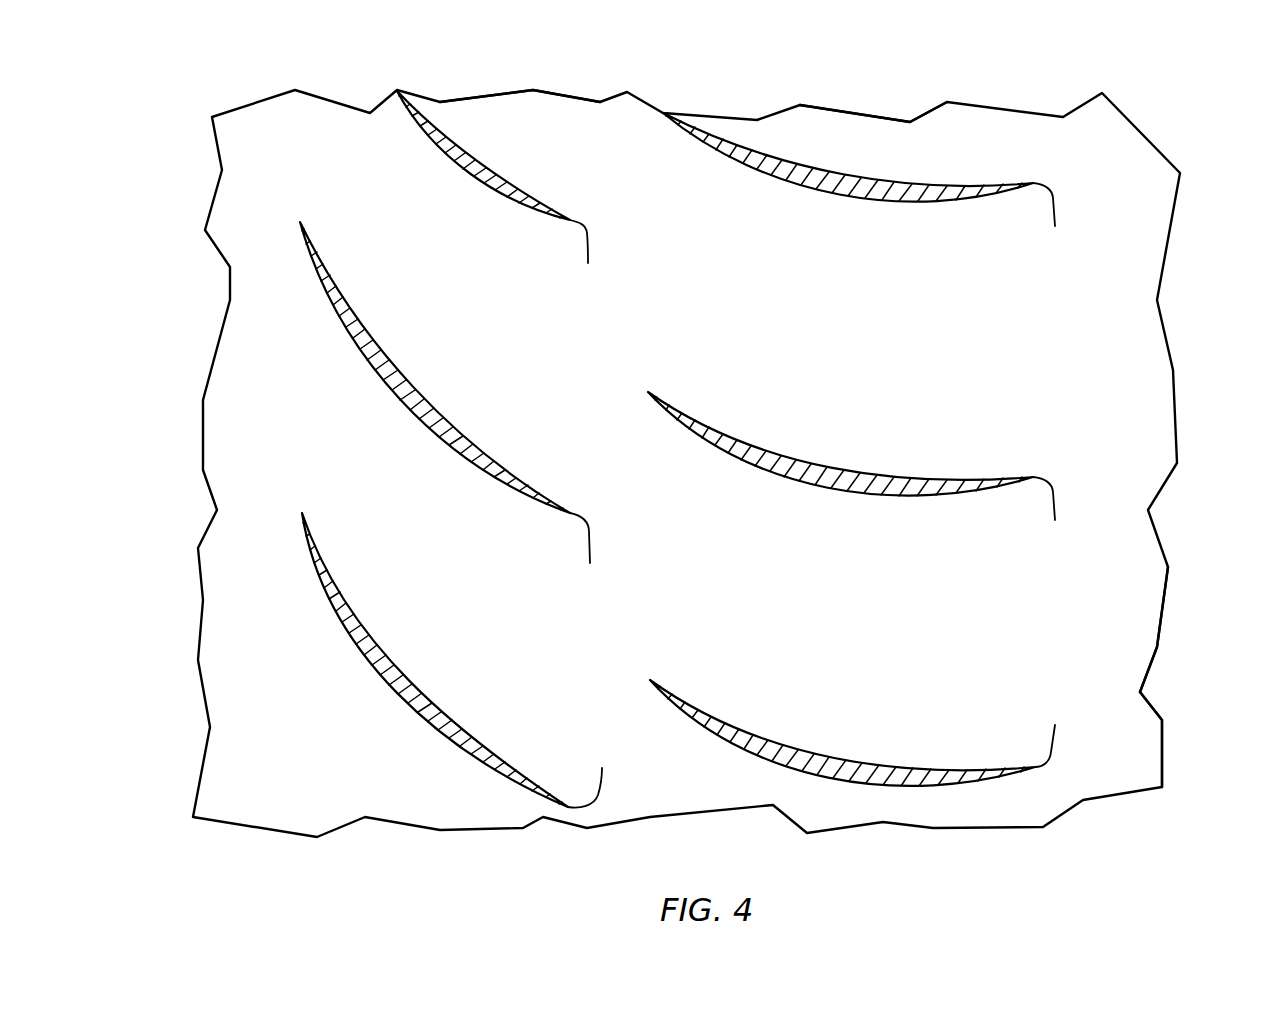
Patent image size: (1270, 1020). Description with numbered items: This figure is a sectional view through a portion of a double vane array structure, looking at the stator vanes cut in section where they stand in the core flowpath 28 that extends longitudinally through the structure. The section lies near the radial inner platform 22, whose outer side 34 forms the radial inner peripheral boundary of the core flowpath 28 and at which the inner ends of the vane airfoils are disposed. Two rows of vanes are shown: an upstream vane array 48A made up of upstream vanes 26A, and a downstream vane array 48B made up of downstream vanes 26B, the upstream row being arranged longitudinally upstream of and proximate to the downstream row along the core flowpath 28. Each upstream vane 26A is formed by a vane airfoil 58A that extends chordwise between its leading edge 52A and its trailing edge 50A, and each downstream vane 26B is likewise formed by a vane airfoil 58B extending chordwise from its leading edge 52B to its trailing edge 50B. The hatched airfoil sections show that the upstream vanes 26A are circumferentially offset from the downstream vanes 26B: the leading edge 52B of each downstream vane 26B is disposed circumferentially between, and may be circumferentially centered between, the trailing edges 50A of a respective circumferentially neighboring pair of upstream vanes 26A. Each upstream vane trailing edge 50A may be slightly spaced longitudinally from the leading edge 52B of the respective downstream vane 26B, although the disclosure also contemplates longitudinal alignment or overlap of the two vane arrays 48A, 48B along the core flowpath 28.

The radial inner platform 22 is at (1175, 721).
The core flowpath 28 is at (234, 406).
The outer side of the inner platform 34 is at (1152, 633).
The upstream vane array 48A is at (510, 76).
The downstream vane array 48B is at (863, 96).
The upstream vane 26A is at (470, 195).
The vane airfoil of the upstream vane 58A is at (432, 449).
The downstream vane 26B is at (832, 212).
The vane airfoil of the downstream vane 58B is at (839, 450).
The trailing edge of the upstream vane 50A is at (595, 514).
The trailing edge of the downstream vane 50B is at (1054, 475).
The leading edge of the upstream vane 52A is at (299, 220).
The leading edge of the downstream vane 52B is at (663, 114).